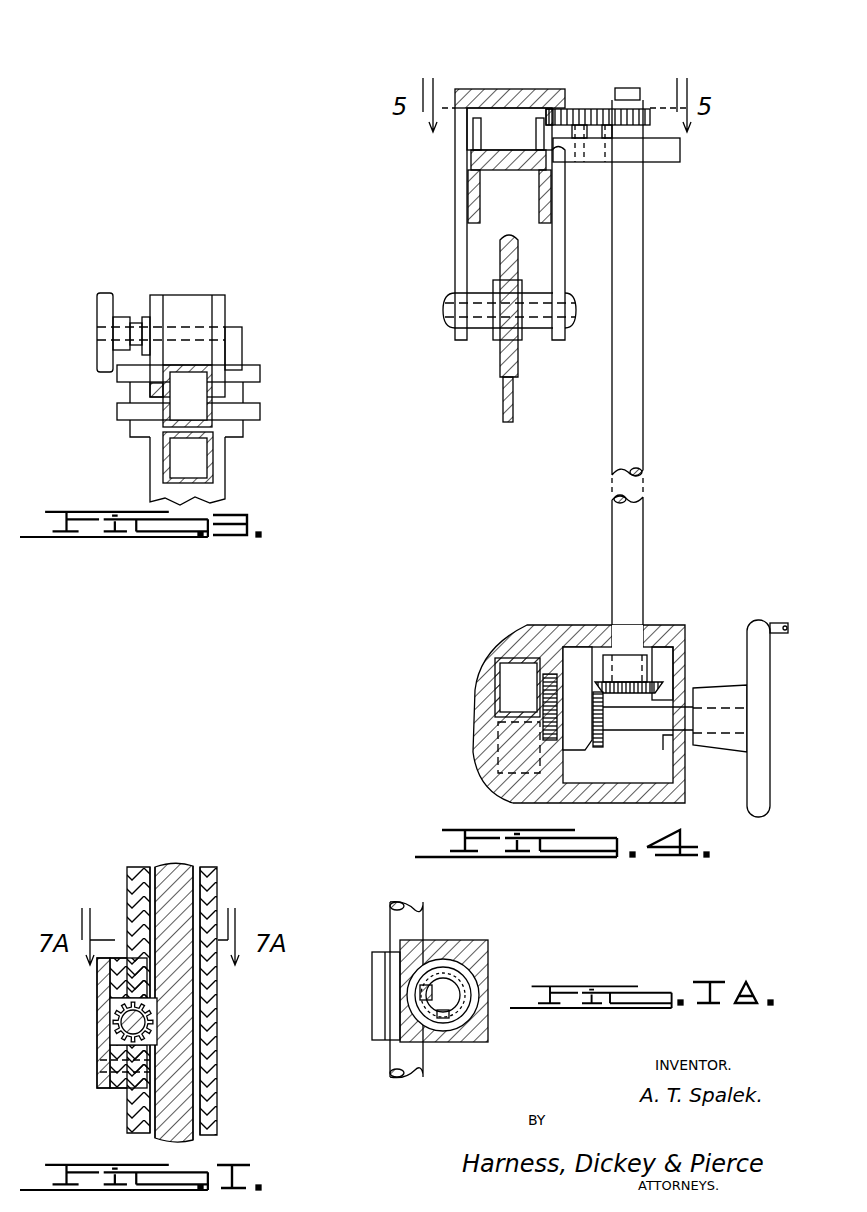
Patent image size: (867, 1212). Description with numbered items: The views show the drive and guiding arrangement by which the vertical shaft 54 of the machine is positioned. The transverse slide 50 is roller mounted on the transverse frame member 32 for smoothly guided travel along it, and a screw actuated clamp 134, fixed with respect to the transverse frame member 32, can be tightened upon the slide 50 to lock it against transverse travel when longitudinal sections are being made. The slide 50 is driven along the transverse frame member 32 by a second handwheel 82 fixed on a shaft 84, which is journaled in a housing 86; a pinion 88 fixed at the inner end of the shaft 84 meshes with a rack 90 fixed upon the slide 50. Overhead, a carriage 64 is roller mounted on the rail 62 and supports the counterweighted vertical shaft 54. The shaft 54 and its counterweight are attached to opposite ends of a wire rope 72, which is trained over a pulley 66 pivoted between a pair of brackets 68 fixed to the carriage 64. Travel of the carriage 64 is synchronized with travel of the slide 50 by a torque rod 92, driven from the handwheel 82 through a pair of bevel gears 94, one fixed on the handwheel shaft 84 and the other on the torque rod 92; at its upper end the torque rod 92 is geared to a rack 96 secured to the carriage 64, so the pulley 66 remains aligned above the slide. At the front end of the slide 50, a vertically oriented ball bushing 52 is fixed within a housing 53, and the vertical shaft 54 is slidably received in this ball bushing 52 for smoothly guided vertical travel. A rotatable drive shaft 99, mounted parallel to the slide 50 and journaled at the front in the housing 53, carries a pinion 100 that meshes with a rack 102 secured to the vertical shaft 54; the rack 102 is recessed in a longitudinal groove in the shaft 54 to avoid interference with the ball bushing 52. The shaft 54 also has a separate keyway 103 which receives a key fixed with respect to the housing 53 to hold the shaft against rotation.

In FIG. 3, the screw actuated clamp 134 is at (226, 311).
In FIG. 3, the transverse slide 50 is at (196, 365).
In FIG. 4, the transverse slide 50 is at (495, 660).
In FIG. 3, the rack 90 is at (150, 389).
In FIG. 4, the rack 90 is at (552, 673).
In FIG. 3, the transverse frame member 32 is at (165, 463).
In FIG. 4, the transverse frame member 32 is at (472, 745).
In FIG. 4, the carriage 64 is at (508, 94).
In FIG. 4, the rack 96 is at (555, 108).
In FIG. 4, the brackets 68 is at (455, 252).
In FIG. 4, the rail 62 is at (531, 182).
In FIG. 4, the pulley 66 is at (500, 362).
In FIG. 4, the wire rope 72 is at (503, 400).
In FIG. 4, the torque rod 92 is at (636, 356).
In FIG. 4, the housing 86 is at (660, 625).
In FIG. 4, the second handwheel 82 is at (758, 621).
In FIG. 4, the shaft 84 is at (645, 722).
In FIG. 4, the bevel gears 94 is at (600, 686).
In FIG. 4, the pinion 88 is at (567, 735).
In FIG. 7, the ball bushing 52 is at (200, 870).
In FIG. 7A, the ball bushing 52 is at (450, 1015).
In FIG. 7, the housing 53 is at (213, 1066).
In FIG. 7A, the housing 53 is at (486, 955).
In FIG. 7, the vertical shaft 54 is at (188, 894).
In FIG. 7A, the vertical shaft 54 is at (456, 1006).
In FIG. 7, the drive shaft 99 is at (112, 1040).
In FIG. 7A, the drive shaft 99 is at (390, 920).
In FIG. 7, the pinion 100 is at (110, 1022).
In FIG. 7A, the pinion 100 is at (400, 990).
In FIG. 7, the rack 102 is at (157, 1022).
In FIG. 7A, the rack 102 is at (487, 975).
In FIG. 7A, the keyway 103 is at (440, 1020).